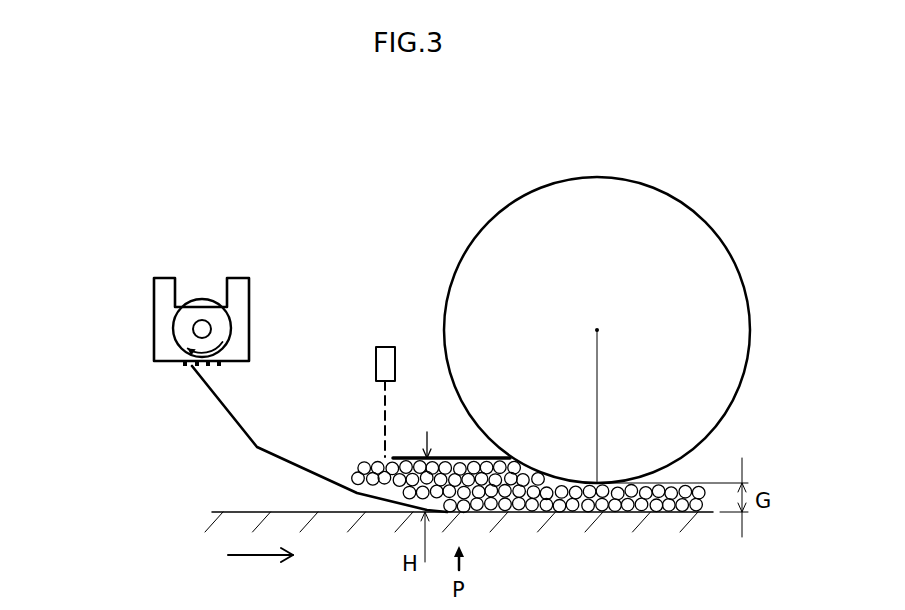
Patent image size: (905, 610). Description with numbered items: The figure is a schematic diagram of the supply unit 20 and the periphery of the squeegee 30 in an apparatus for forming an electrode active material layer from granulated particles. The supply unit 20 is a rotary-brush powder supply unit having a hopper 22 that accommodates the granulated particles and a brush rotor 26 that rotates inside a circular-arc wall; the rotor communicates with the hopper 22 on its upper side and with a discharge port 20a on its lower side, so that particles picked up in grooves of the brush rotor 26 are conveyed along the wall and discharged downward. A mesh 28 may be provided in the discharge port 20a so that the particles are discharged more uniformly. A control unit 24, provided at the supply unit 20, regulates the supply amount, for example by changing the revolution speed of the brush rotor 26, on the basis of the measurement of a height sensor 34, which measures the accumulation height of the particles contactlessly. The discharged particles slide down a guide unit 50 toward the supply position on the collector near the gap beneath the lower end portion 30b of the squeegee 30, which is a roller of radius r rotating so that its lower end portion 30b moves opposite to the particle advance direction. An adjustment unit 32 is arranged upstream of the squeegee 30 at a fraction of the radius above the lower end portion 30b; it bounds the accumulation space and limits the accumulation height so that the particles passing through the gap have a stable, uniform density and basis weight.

The supply unit 20 is at (189, 309).
The control unit 24 is at (183, 320).
The hopper 22 is at (165, 278).
The brush rotor 26 is at (190, 333).
The mesh 28 is at (186, 366).
The discharge port 20a is at (205, 366).
The guide unit 50 is at (230, 428).
The height sensor 34 is at (385, 347).
The adjustment unit 32 is at (455, 456).
The squeegee 30 is at (693, 210).
The lower end portion 30b is at (595, 482).